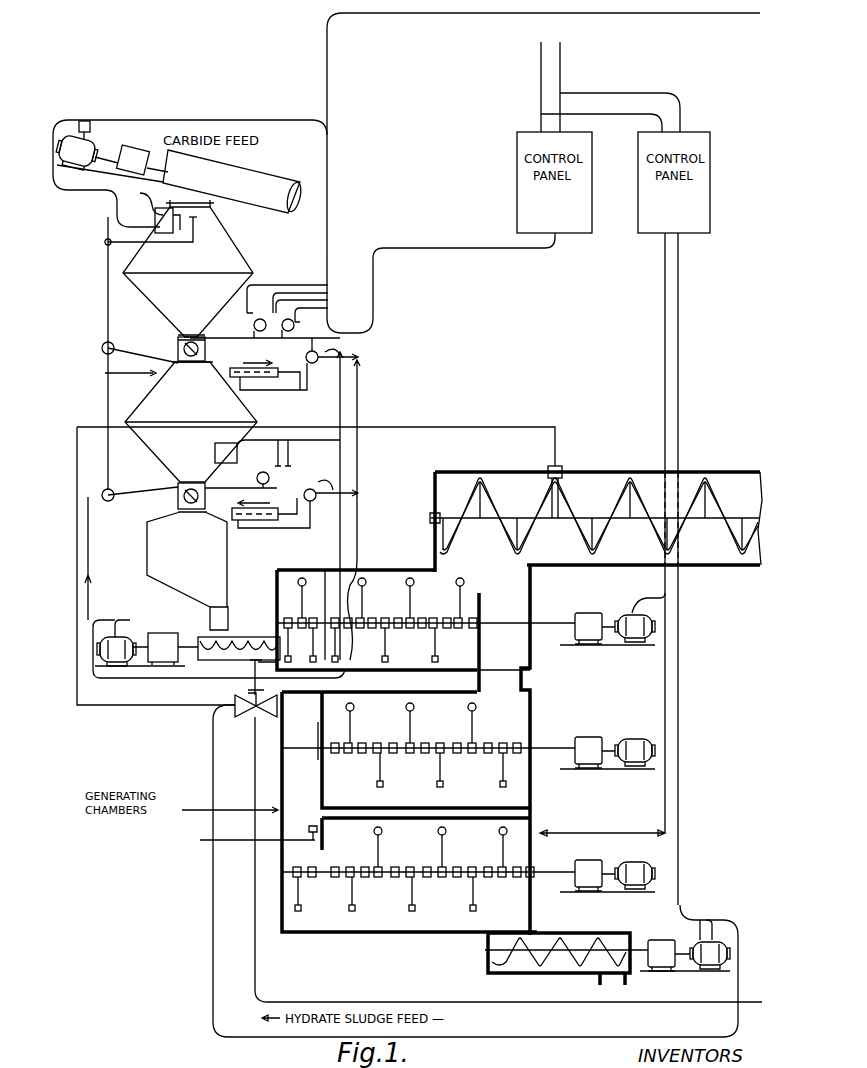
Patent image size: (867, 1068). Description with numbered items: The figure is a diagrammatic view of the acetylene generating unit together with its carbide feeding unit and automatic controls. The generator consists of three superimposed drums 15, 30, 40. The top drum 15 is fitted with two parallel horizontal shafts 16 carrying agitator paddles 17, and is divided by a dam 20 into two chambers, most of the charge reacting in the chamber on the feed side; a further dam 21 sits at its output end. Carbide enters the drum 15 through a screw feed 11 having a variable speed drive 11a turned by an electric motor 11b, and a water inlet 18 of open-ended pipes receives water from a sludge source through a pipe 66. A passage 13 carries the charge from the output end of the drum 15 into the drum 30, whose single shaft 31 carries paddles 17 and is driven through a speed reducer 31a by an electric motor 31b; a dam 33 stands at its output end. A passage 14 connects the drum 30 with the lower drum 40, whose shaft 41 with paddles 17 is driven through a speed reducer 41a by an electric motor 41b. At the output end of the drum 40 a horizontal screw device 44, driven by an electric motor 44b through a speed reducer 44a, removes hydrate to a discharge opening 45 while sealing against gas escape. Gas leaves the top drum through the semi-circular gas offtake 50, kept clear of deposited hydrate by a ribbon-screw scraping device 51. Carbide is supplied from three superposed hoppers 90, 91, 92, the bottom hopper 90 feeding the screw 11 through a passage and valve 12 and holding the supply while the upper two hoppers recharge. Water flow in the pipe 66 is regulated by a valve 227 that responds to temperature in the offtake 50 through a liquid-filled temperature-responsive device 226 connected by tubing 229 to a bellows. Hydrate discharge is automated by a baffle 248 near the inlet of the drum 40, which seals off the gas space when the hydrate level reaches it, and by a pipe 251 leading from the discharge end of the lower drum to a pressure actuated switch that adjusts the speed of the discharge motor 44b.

The screw feed 11 is at (252, 637).
The variable speed drive 11a is at (161, 633).
The electric motor 11b is at (118, 628).
The valve 12 is at (620, 612).
The passage 13 is at (503, 750).
The passage 14 is at (300, 775).
The drum 15 is at (285, 570).
The shafts 16 is at (358, 574).
The agitator paddles 17 is at (412, 600).
The water inlet 18 is at (268, 668).
The dam 20 is at (326, 570).
The dam 21 is at (484, 597).
The drum 30 is at (334, 692).
The shaft 31 is at (390, 740).
The speed reducer 31a is at (582, 737).
The electric motor 31b is at (634, 737).
The dam 33 is at (320, 728).
The drum 40 is at (333, 934).
The shaft 41 is at (358, 866).
The speed reducer 41a is at (592, 857).
The electric motor 41b is at (640, 857).
The screw device 44 is at (584, 975).
The speed reducer 44a is at (658, 940).
The electric motor 44b is at (716, 936).
The discharge opening 45 is at (612, 976).
The gas offtake 50 is at (598, 470).
The scraping device 51 is at (490, 480).
The pipe 66 is at (255, 785).
The hopper 90 is at (168, 550).
The hopper 91 is at (158, 396).
The hopper 92 is at (148, 300).
The temperature-responsive device 226 is at (566, 478).
The regulating valve 227 is at (252, 722).
The tubing 229 is at (425, 419).
The baffle 248 is at (200, 840).
The pipe 251 is at (588, 833).